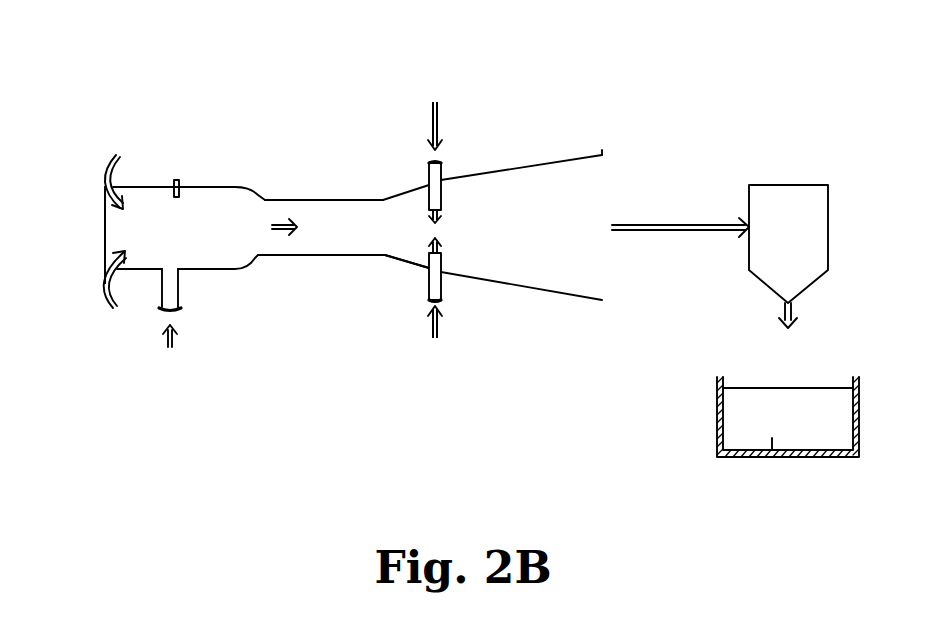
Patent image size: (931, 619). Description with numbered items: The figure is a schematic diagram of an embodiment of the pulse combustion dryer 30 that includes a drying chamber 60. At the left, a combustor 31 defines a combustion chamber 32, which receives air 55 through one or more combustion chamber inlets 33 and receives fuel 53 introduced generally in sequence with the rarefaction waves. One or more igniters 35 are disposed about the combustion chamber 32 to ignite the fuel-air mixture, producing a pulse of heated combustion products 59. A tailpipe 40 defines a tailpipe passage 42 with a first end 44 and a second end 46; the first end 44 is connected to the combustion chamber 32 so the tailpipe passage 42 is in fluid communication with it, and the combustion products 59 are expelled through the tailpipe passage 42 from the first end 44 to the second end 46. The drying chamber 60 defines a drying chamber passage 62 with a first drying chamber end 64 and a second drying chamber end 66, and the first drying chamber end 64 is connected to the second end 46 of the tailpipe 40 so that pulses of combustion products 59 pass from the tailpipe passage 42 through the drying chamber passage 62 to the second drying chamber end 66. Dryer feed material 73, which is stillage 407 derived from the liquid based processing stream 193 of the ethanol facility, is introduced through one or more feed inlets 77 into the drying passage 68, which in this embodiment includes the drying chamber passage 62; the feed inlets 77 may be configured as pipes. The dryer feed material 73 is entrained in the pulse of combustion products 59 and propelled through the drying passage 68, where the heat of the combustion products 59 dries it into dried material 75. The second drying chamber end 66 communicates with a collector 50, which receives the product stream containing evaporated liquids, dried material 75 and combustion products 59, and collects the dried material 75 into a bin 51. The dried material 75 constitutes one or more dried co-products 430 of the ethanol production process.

The pulse combustion dryer 30 is at (173, 73).
The combustor 31 is at (205, 187).
The combustion chamber 32 is at (145, 262).
The combustion chamber inlet 33 is at (105, 183).
The igniter 35 is at (178, 182).
The tailpipe 40 is at (297, 200).
The tailpipe passage 42 is at (308, 256).
The first end 44 is at (248, 277).
The second end 46 is at (385, 257).
The collector 50 is at (818, 220).
The bin 51 is at (718, 415).
The fuel 53 is at (174, 330).
The air 55 is at (105, 165).
The combustion products 59 is at (277, 222).
The drying chamber 60 is at (520, 290).
The drying chamber passage 62 is at (515, 175).
The first drying chamber end 64 is at (383, 198).
The second drying chamber end 66 is at (600, 155).
The drying passage 68 is at (407, 252).
The dryer feed material 73 is at (440, 148).
The dried material 75 is at (690, 224).
The feed inlet 77 is at (443, 175).
The liquid based processing stream 193 is at (440, 130).
The stillage 407 is at (432, 140).
The dried co-product 430 is at (773, 450).